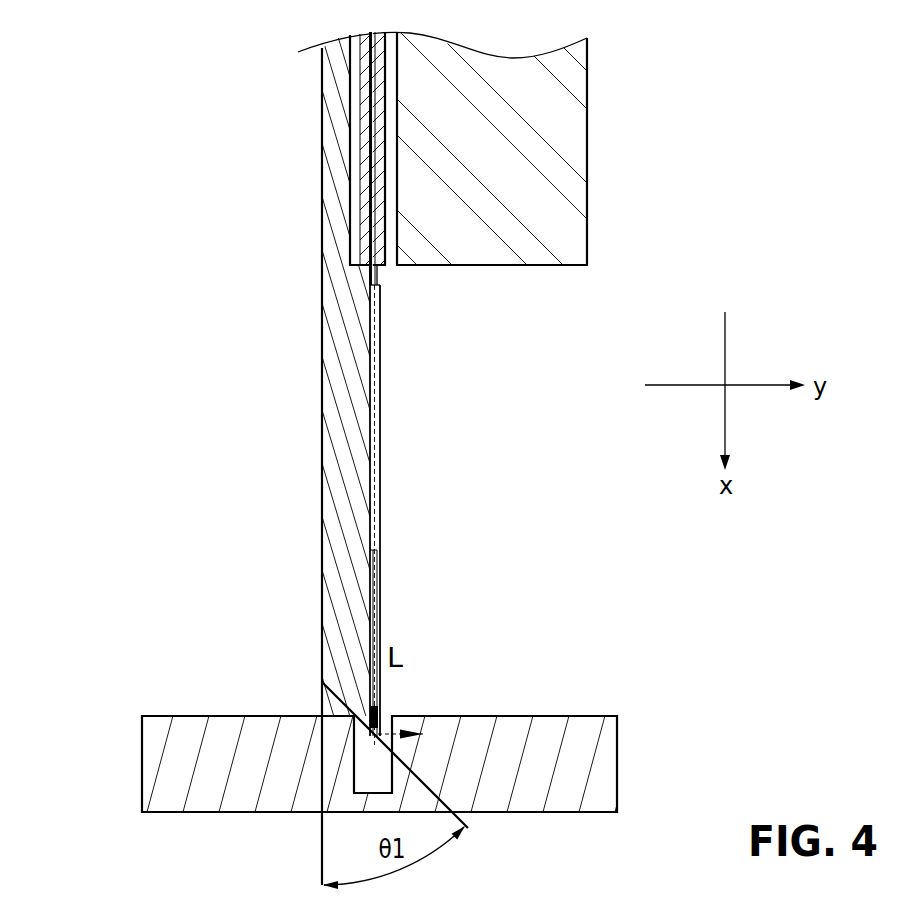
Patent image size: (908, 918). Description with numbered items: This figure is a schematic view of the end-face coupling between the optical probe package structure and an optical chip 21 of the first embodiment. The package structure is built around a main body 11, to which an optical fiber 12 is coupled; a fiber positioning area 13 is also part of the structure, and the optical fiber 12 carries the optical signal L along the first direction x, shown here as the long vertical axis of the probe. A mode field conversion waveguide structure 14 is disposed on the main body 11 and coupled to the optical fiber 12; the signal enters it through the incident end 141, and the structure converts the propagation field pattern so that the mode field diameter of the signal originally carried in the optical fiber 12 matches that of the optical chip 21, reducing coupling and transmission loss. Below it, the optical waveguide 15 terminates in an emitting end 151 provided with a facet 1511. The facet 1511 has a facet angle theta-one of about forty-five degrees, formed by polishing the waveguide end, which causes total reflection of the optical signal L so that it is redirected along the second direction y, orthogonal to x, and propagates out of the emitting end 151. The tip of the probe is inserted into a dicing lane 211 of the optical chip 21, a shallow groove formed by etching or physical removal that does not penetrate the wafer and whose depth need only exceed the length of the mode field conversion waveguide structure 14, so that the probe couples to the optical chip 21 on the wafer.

The main body 11 is at (340, 178).
The optical fiber 12 is at (368, 102).
The fiber positioning area 13 is at (357, 235).
The mode field conversion waveguide structure 14 is at (294, 515).
The incident end 141 is at (373, 286).
The optical waveguide 15 is at (290, 712).
The emitting end 151 is at (376, 736).
The facet 1511 is at (342, 697).
The optical chip 21 is at (376, 719).
The dicing lane 211 is at (392, 726).